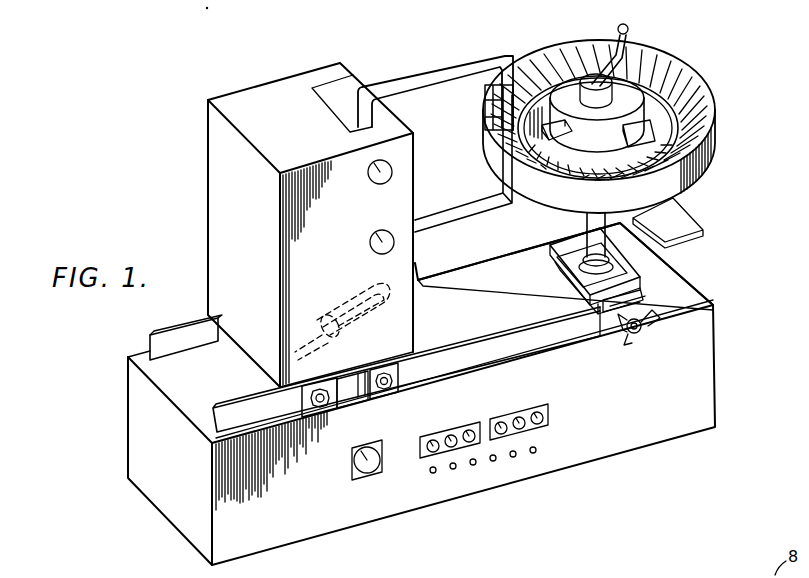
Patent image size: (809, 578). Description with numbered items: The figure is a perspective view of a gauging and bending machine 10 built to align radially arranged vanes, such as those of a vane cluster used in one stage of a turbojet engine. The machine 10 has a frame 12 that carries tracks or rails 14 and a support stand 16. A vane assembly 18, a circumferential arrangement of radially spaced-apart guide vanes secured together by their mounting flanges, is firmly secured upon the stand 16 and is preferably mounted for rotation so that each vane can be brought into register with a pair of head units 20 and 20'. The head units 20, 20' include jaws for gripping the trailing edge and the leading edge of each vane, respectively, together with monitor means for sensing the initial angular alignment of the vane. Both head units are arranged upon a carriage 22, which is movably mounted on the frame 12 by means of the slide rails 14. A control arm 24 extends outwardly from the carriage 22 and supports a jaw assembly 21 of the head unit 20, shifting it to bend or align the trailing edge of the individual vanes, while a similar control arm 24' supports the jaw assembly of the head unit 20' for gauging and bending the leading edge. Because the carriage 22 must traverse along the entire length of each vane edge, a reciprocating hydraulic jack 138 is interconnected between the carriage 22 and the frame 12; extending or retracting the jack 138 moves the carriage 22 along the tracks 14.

The gauging and bending machine 10 is at (80, 352).
The frame 12 is at (703, 372).
The tracks or rails 14 is at (197, 408).
The support stand 16 is at (653, 281).
The vane assembly 18 is at (723, 95).
The head unit 20 is at (446, 116).
The head unit 20' is at (565, 251).
The jaw assembly 21 is at (486, 118).
The carriage 22 is at (223, 208).
The control arm 24 is at (435, 84).
The control arm 24' is at (463, 159).
The reciprocating hydraulic jack 138 is at (374, 331).